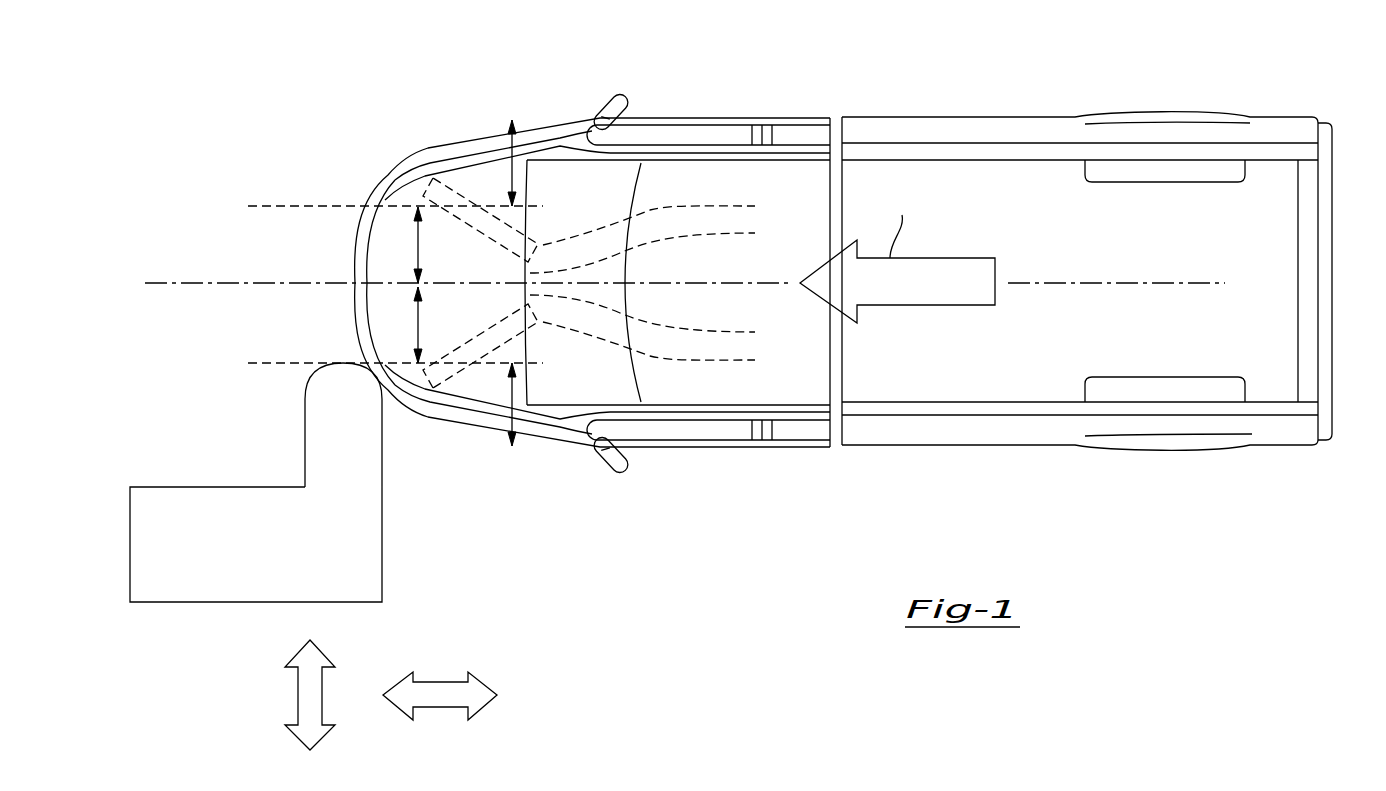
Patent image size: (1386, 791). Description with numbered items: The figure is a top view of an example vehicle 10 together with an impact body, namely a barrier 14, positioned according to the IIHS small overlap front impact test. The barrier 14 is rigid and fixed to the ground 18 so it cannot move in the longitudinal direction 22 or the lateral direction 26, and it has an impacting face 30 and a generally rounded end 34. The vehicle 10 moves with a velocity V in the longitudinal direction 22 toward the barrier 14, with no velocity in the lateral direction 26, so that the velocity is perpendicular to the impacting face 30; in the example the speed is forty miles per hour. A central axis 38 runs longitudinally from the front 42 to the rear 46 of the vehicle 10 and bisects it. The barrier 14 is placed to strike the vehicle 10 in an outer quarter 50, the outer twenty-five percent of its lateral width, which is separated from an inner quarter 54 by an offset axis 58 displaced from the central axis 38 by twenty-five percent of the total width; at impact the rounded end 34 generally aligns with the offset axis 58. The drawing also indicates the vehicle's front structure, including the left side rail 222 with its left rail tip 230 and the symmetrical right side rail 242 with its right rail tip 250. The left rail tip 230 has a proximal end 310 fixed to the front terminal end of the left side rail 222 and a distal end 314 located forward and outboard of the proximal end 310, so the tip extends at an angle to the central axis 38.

The vehicle 10 is at (822, 95).
The barrier 14 is at (195, 612).
The ground 18 is at (272, 212).
The longitudinal direction 22 is at (437, 682).
The lateral direction 26 is at (297, 695).
The impacting face 30 is at (378, 537).
The rounded end 34 is at (342, 362).
The central axis 38 is at (153, 283).
The front 42 is at (360, 222).
The rear 46 is at (1333, 168).
The outer quarter 50 is at (513, 165).
The inner quarter 54 is at (420, 247).
The offset axis 58 is at (342, 205).
The left side rail 222 is at (688, 361).
The left rail tip 230 is at (467, 392).
The right side rail 242 is at (688, 204).
The right rail tip 250 is at (468, 182).
The proximal end 310 is at (550, 245).
The distal end 314 is at (402, 147).